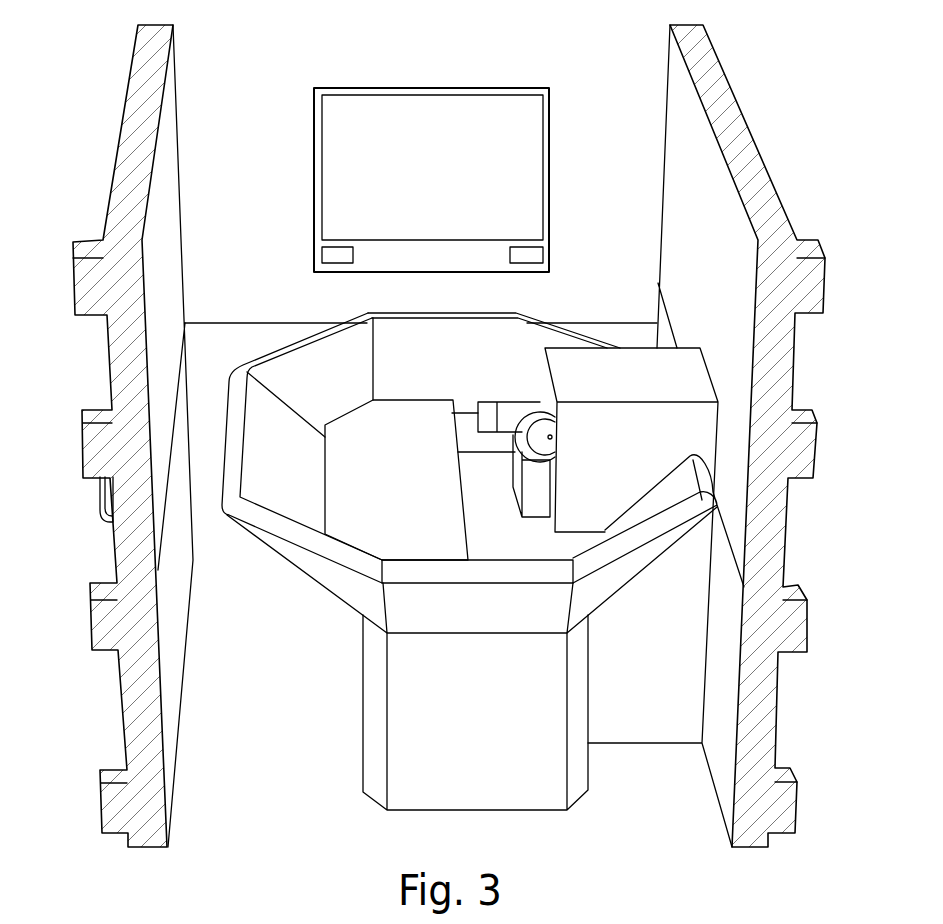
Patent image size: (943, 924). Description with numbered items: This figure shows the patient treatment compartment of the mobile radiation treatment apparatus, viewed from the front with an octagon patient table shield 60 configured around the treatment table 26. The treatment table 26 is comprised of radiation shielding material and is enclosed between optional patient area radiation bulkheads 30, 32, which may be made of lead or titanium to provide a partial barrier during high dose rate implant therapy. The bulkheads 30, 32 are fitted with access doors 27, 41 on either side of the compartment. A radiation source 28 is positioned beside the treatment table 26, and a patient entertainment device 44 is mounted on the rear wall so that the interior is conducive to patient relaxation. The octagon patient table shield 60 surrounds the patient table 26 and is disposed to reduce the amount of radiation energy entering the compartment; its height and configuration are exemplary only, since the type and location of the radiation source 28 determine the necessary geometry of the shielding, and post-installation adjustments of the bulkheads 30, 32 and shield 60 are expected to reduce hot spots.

The treatment table 26 is at (409, 497).
The access door 27 is at (788, 488).
The radiation source 28 is at (508, 403).
The patient area radiation bulkhead 30 is at (175, 187).
The patient area radiation bulkhead 32 is at (673, 122).
The access door 41 is at (98, 490).
The patient entertainment device 44 is at (446, 176).
The octagon patient table shield 60 is at (300, 560).